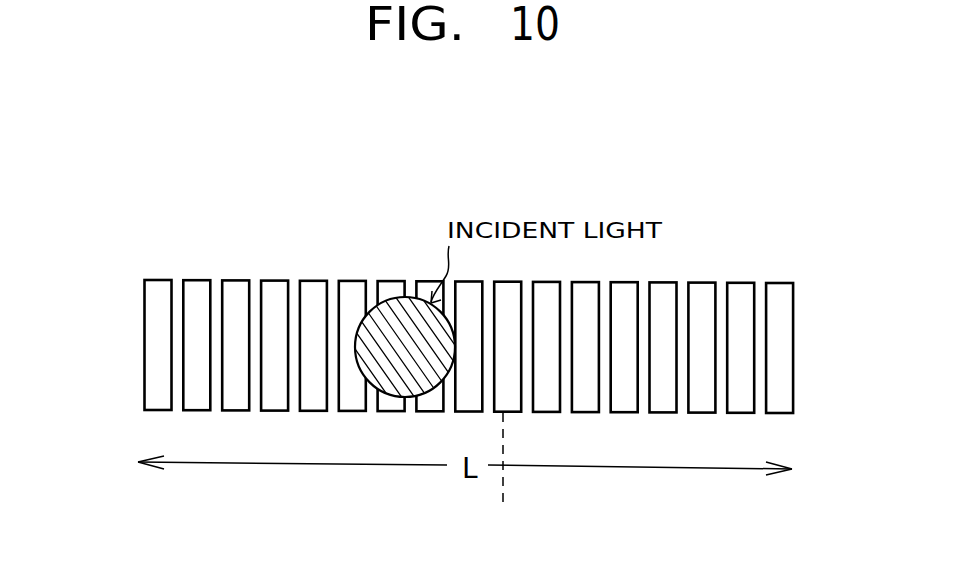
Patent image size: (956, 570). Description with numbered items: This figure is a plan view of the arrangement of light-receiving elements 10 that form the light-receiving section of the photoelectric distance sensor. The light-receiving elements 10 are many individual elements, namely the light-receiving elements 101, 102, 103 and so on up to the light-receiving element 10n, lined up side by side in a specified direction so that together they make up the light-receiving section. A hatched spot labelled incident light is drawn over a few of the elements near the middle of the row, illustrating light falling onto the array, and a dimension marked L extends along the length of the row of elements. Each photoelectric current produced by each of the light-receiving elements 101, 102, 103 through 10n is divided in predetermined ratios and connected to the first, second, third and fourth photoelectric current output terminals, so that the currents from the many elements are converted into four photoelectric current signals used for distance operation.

The light-receiving elements 10 is at (141, 362).
The light-receiving element 101 is at (157, 280).
The light-receiving element 102 is at (198, 280).
The light-receiving element 103 is at (245, 280).
The light-receiving element 10n is at (782, 285).